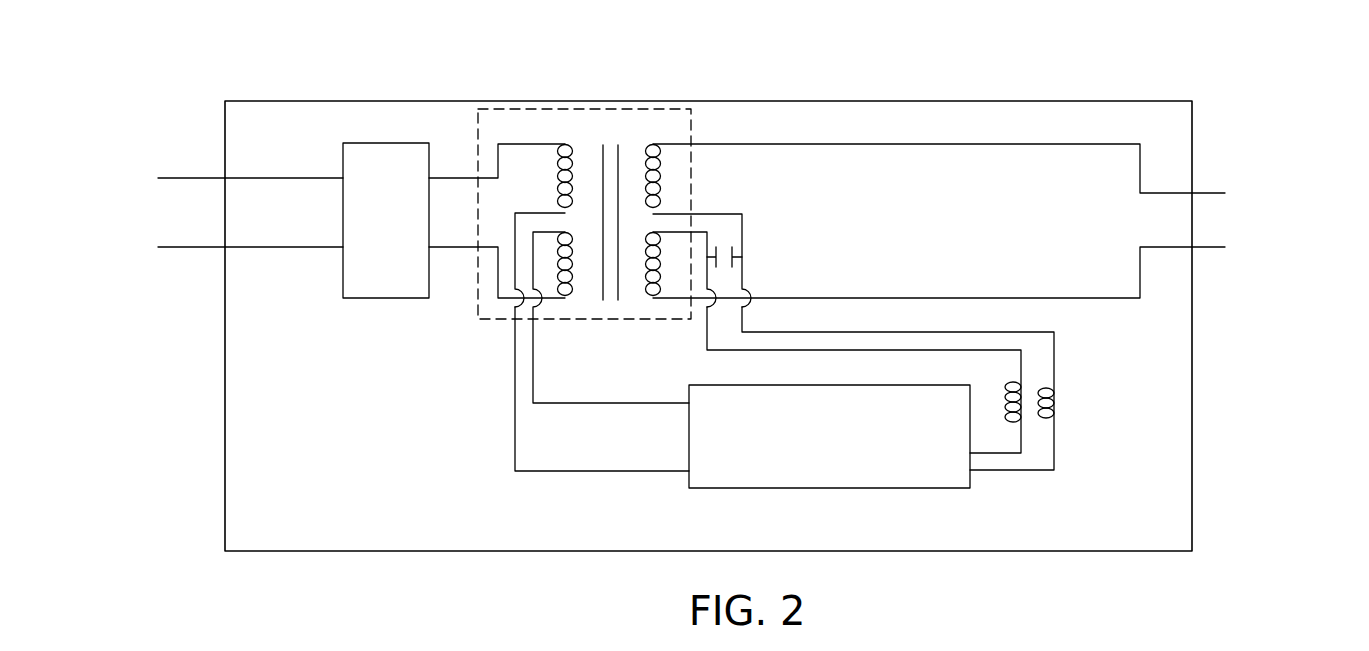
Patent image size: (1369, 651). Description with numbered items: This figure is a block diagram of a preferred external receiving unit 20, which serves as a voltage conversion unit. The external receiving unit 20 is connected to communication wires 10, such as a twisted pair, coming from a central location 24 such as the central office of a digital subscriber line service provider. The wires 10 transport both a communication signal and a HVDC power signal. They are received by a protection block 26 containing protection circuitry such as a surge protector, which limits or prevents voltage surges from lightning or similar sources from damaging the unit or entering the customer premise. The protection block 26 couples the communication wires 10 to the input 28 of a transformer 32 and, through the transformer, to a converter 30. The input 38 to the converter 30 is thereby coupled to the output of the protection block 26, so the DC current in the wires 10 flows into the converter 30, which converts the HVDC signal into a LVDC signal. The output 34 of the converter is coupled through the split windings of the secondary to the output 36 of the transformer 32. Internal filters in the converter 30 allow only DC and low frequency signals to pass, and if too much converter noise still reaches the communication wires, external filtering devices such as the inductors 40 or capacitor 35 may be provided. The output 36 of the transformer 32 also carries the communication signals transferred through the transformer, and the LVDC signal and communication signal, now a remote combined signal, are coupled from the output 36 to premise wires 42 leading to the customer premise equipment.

The communication wires 10 is at (191, 160).
The external receiving unit 20 is at (1194, 98).
The central location 24 is at (118, 261).
The protection block 26 is at (378, 321).
The input of transformer 28 is at (551, 152).
The converter 30 is at (943, 492).
The transformer 32 is at (694, 114).
The output of converter 34 is at (1057, 493).
The capacitor 35 is at (726, 234).
The output of transformer 36 is at (671, 152).
The input to converter 38 is at (551, 475).
The inductors 40 is at (1043, 394).
The premise wires 42 is at (1210, 264).